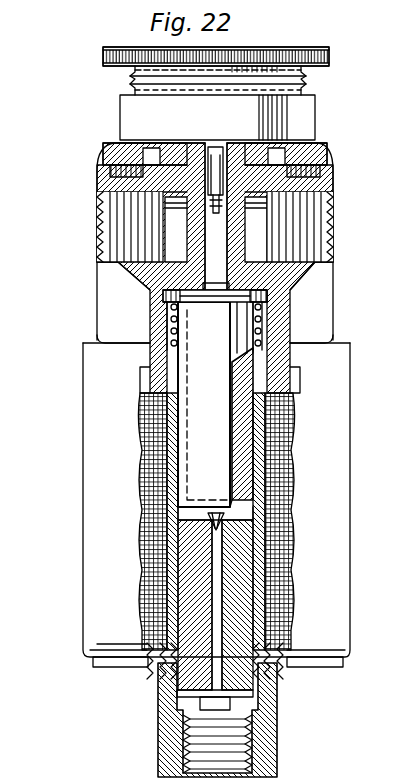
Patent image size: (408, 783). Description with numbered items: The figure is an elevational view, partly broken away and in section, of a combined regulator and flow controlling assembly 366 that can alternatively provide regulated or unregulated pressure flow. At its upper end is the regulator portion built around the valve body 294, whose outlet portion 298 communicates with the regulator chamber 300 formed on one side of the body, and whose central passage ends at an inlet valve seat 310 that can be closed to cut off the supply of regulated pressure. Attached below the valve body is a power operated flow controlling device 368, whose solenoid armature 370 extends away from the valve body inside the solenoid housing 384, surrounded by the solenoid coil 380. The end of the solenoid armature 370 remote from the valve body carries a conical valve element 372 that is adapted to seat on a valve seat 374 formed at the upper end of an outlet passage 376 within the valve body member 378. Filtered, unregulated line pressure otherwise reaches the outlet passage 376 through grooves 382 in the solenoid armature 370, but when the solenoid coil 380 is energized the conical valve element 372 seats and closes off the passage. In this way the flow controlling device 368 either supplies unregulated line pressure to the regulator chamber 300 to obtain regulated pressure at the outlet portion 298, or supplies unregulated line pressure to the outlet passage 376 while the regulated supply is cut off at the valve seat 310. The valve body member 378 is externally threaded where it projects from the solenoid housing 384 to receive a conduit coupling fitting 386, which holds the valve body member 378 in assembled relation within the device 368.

The combined regulator and flow controlling assembly 366 is at (76, 148).
The regulator chamber 300 is at (305, 173).
The outlet portion 298 is at (307, 213).
The valve body 294 is at (115, 300).
The inlet valve seat 310 is at (218, 292).
The solenoid armature 370 is at (237, 433).
The grooves 382 is at (237, 478).
The solenoid coil 380 is at (283, 503).
The conical valve element 372 is at (238, 516).
The valve seat 374 is at (244, 540).
The outlet passage 376 is at (215, 613).
The flow controlling device 368 is at (77, 552).
The solenoid housing 384 is at (108, 623).
The valve body member 378 is at (197, 655).
The conduit coupling fitting 386 is at (253, 730).